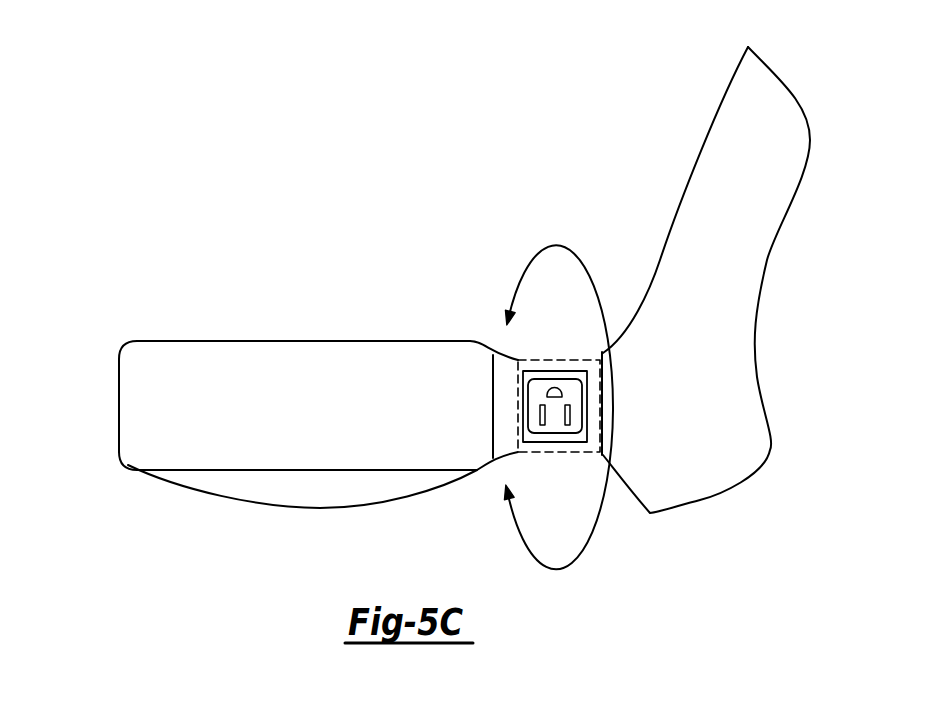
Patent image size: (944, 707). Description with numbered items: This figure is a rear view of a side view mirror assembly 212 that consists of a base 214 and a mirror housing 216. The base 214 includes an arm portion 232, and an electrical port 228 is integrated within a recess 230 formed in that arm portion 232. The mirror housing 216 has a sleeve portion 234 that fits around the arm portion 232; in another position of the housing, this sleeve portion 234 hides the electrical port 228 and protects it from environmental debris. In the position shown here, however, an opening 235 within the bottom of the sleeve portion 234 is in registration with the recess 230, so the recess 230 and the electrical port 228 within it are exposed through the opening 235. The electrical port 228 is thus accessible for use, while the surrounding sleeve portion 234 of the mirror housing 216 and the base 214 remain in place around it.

The side view mirror assembly 212 is at (399, 251).
The base 214 is at (697, 155).
The mirror housing 216 is at (117, 420).
The electrical port 228 is at (542, 425).
The recess 230 is at (558, 388).
The arm portion 232 is at (588, 454).
The sleeve portion 234 is at (503, 368).
The opening 235 is at (527, 415).